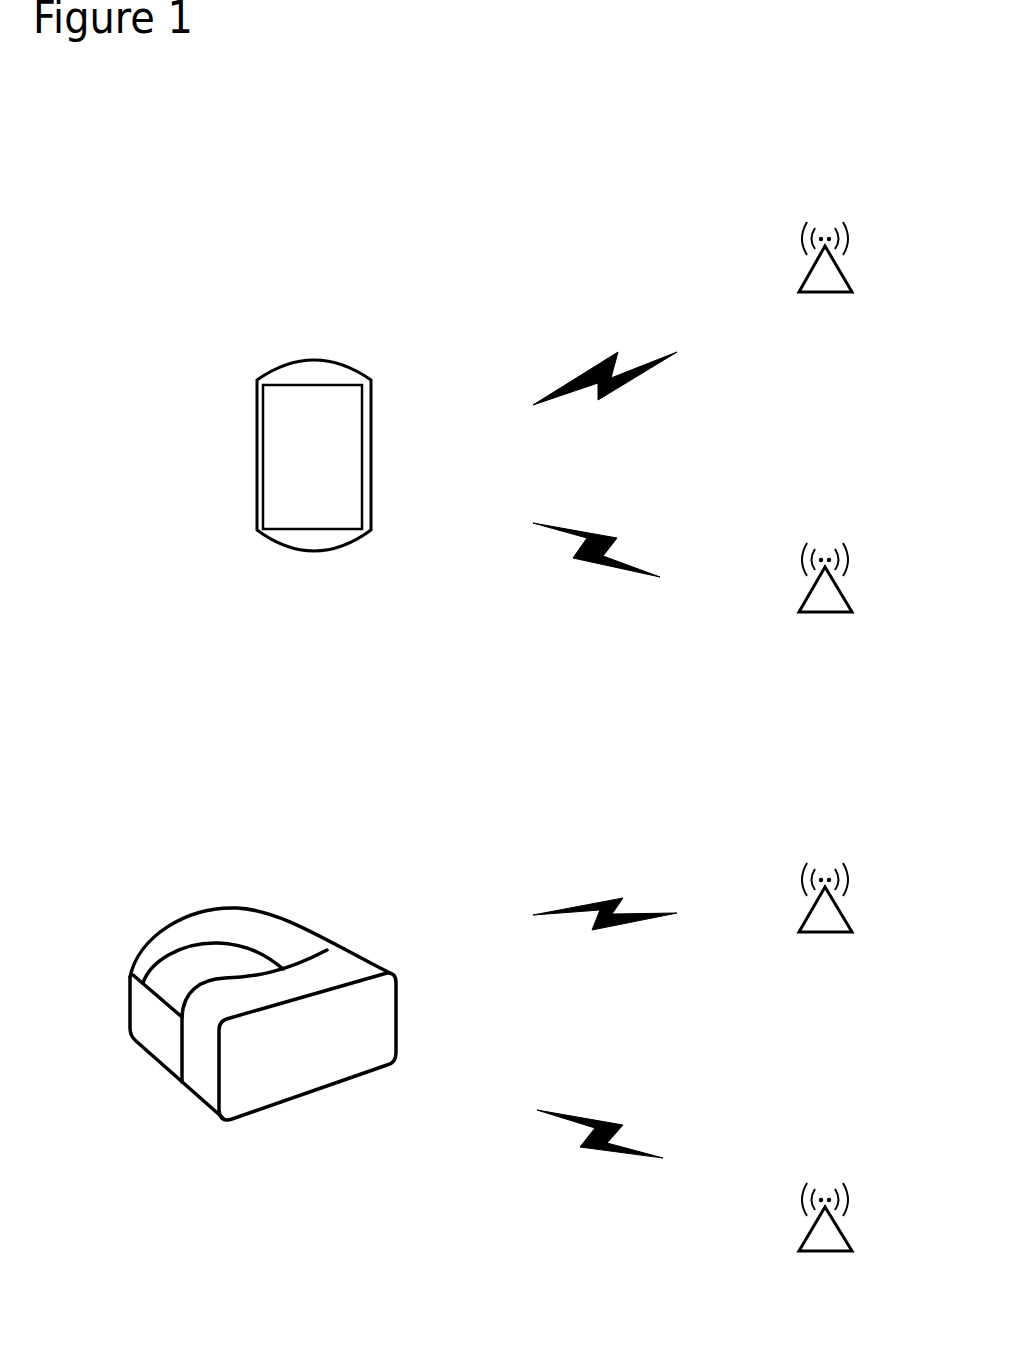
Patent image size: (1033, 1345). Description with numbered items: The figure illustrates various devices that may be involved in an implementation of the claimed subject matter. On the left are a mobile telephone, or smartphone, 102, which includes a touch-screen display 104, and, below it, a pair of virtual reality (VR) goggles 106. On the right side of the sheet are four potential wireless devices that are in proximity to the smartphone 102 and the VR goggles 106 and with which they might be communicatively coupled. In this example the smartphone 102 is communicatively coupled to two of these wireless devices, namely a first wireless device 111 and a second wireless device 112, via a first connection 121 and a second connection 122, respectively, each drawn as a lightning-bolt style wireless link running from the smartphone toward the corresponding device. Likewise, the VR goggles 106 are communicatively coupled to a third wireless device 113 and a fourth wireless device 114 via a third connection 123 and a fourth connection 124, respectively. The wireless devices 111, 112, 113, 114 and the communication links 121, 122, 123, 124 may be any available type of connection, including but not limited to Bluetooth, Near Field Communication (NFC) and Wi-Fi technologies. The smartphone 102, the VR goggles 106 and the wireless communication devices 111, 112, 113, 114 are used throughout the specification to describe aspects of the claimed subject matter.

The mobile telephone 102 is at (312, 358).
The touch-screen display 104 is at (332, 423).
The virtual reality goggles 106 is at (263, 912).
The WD_1 111 is at (826, 292).
The WD_2 112 is at (826, 612).
The WD_3 113 is at (826, 932).
The WD_4 114 is at (826, 1251).
The connection 121 is at (624, 330).
The connection 122 is at (624, 519).
The connection 123 is at (624, 861).
The connection 124 is at (626, 1100).